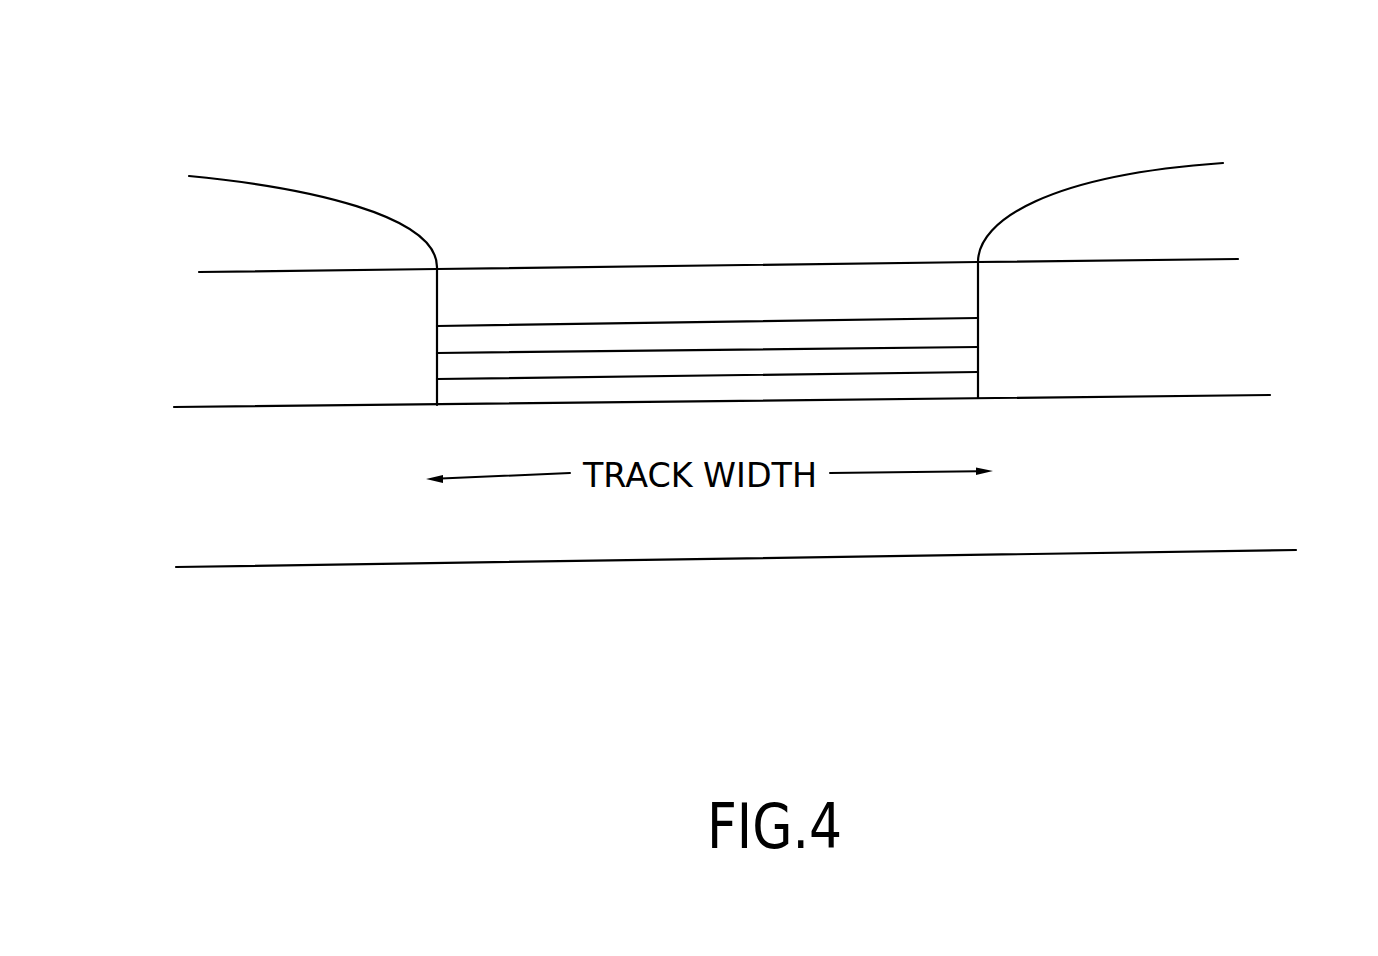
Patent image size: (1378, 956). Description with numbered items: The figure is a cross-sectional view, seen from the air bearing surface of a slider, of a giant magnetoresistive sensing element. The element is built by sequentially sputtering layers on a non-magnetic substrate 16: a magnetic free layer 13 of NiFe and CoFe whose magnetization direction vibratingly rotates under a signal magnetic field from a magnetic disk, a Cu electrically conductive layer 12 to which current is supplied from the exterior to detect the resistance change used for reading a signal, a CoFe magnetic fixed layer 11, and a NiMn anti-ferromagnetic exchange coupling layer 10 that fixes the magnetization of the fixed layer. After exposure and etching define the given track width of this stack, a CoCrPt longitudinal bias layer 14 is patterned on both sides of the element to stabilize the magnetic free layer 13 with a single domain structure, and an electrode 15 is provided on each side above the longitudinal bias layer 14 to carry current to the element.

The anti-ferromagnetic exchange coupling layer 10 is at (493, 290).
The magnetic fixed layer 11 is at (540, 340).
The electrically conductive layer 12 is at (590, 365).
The magnetic free layer 13 is at (637, 388).
The longitudinal bias layer 14 is at (205, 337).
The electrode 15 is at (1170, 198).
The non-magnetic substrate 16 is at (935, 538).